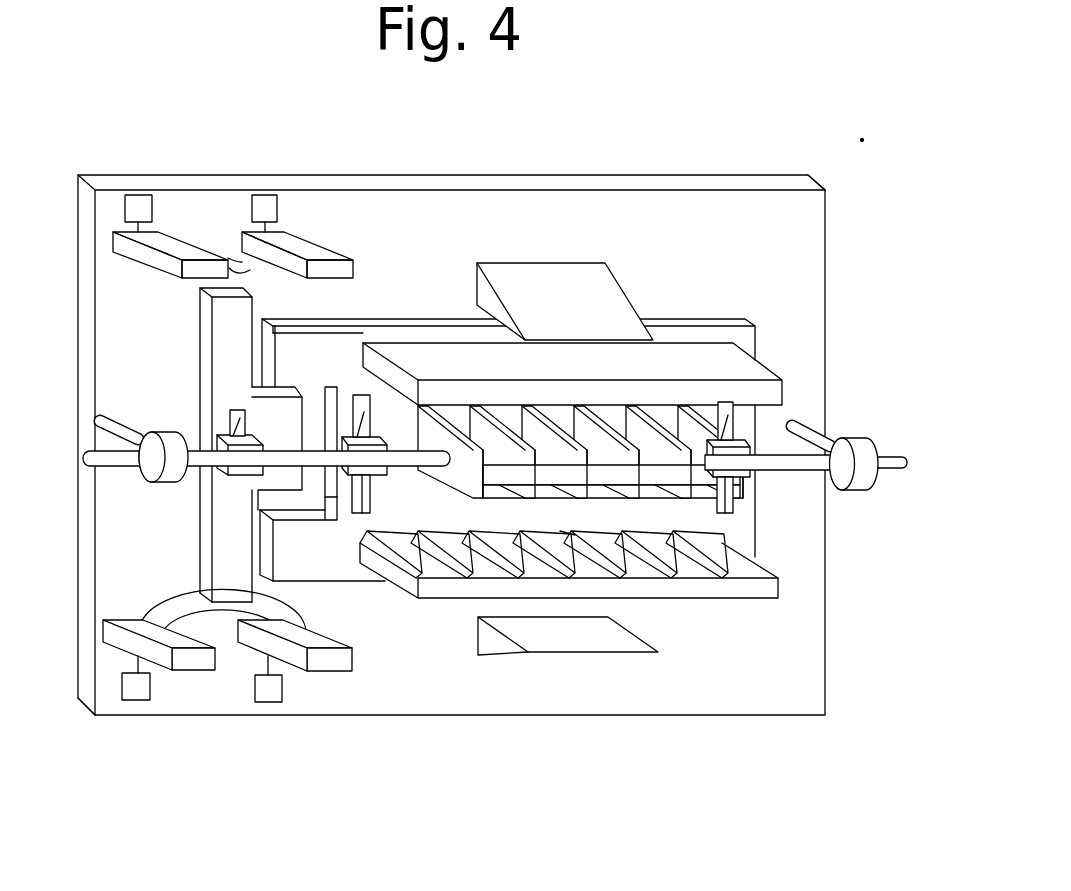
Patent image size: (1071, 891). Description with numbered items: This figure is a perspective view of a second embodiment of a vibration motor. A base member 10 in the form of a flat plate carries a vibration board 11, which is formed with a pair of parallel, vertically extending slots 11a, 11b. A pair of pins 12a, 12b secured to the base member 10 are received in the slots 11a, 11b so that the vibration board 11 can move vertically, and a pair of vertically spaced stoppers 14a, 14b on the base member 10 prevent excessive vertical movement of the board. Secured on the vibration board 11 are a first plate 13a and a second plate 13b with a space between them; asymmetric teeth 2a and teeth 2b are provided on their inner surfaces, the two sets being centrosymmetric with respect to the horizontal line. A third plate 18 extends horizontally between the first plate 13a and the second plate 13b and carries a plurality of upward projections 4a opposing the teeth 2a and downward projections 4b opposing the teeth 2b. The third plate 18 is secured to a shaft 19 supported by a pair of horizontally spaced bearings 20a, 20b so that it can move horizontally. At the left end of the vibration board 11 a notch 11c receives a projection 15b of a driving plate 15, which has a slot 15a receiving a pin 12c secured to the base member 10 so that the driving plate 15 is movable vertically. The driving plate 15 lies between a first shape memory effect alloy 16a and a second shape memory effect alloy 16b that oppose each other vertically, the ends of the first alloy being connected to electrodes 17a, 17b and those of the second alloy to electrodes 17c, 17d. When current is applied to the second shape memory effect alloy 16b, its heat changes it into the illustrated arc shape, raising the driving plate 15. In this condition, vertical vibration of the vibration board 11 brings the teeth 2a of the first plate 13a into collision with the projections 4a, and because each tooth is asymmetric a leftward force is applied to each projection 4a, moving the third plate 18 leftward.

The base member 10 is at (447, 206).
The vibration board 11 is at (680, 337).
The slot 11a is at (386, 437).
The slot 11b is at (733, 503).
The notch 11c is at (327, 497).
The pin 12a is at (385, 478).
The pin 12b is at (755, 448).
The pin 12c is at (230, 478).
The first plate 13a is at (722, 365).
The second plate 13b is at (712, 593).
The stopper 14a is at (585, 278).
The stopper 14b is at (583, 652).
The driving plate 15 is at (213, 320).
The slot 15a is at (235, 421).
The projection 15b is at (282, 487).
The first shape memory effect alloy 16a is at (230, 258).
The second shape memory effect alloy 16b is at (220, 610).
The electrode 17a is at (141, 203).
The electrode 17b is at (266, 203).
The electrode 17c is at (138, 690).
The electrode 17d is at (268, 695).
The third plate 18 is at (495, 485).
The shaft 19 is at (364, 398).
The teeth 2a is at (500, 410).
The teeth 2b is at (652, 553).
The upward projections 4a is at (537, 410).
The downward projections 4b is at (567, 500).
The bearing 20a is at (160, 440).
The bearing 20b is at (865, 443).